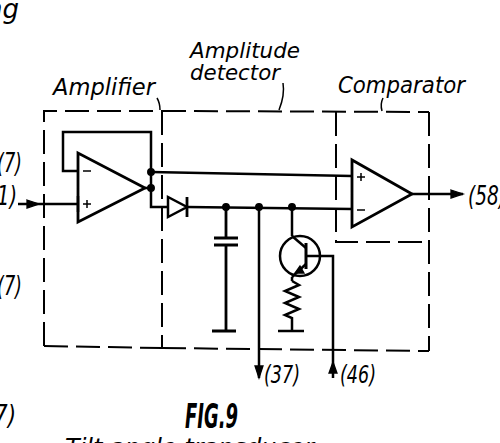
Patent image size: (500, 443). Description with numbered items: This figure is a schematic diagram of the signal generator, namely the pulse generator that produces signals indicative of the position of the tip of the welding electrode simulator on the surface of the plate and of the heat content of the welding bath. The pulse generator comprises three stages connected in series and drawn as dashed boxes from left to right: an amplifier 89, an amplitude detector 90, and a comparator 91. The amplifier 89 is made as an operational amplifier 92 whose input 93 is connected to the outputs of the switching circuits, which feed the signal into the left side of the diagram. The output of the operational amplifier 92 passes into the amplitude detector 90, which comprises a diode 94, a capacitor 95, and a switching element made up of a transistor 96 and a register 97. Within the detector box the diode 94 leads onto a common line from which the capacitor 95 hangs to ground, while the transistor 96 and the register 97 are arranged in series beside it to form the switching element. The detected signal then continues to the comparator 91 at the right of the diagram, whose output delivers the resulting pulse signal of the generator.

The amplifier 89 is at (44, 336).
The amplitude detector 90 is at (202, 356).
The comparator 91 is at (390, 248).
The operational amplifier 92 is at (108, 206).
The input 93 is at (72, 210).
The diode 94 is at (172, 218).
The capacitor 95 is at (236, 242).
The transistor 96 is at (288, 238).
The register 97 is at (297, 294).